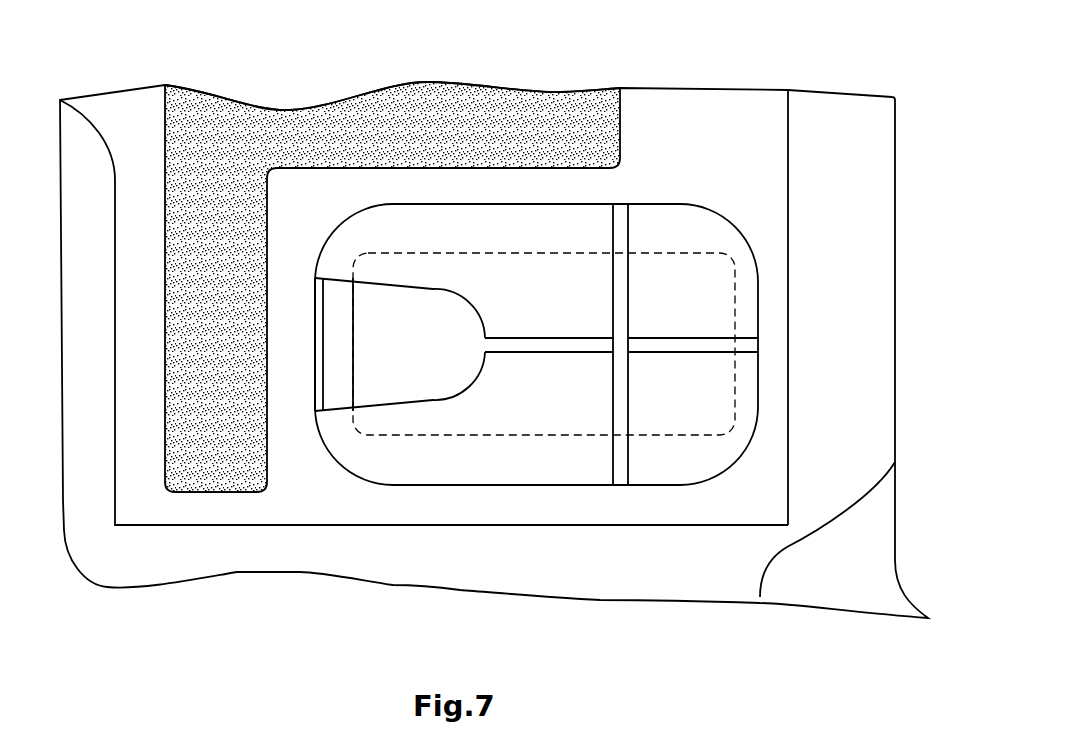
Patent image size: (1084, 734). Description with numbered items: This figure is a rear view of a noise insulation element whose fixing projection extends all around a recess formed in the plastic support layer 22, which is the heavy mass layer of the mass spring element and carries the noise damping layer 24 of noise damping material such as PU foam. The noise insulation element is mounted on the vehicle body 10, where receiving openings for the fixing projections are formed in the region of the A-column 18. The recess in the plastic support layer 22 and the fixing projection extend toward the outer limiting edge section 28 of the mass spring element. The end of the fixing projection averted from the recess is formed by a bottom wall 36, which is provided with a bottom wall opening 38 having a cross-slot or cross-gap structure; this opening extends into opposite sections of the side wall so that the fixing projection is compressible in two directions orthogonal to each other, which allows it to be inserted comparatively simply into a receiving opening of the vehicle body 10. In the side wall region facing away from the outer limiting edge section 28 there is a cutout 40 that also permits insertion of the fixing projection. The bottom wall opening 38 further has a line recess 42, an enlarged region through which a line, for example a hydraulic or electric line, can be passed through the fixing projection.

The vehicle body 10 is at (393, 565).
The A-column 18 is at (760, 597).
The plastic support layer 22 is at (247, 524).
The noise damping layer 24 is at (227, 153).
The outer limiting edge section 28 is at (788, 165).
The bottom wall 36 is at (525, 268).
The bottom wall opening 38 is at (660, 305).
The cutout 40 is at (320, 367).
The line recess 42 is at (397, 315).